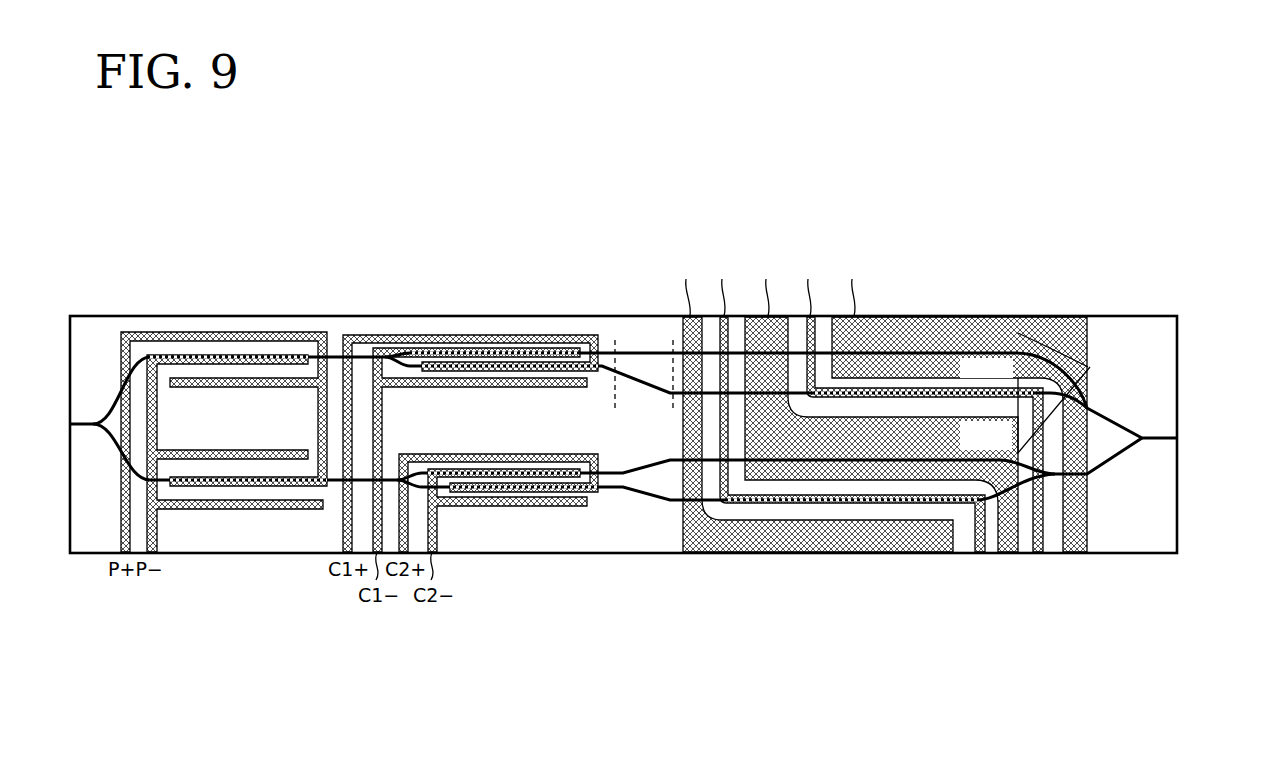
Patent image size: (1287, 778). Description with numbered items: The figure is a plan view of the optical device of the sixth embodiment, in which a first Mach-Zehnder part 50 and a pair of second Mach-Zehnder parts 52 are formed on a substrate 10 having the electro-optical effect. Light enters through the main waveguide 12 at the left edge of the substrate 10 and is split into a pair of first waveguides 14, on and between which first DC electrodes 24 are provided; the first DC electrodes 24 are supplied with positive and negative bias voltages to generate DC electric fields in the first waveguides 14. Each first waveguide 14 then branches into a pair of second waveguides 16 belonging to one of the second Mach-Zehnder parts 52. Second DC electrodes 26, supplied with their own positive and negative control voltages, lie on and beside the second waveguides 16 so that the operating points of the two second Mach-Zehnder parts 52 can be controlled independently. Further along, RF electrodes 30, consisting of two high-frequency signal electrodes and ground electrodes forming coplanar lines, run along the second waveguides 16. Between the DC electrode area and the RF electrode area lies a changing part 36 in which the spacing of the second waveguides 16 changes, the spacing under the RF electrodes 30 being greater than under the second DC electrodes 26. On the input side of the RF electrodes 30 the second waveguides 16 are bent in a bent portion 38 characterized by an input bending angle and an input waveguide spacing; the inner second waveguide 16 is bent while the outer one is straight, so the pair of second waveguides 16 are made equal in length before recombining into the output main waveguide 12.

The substrate 10 is at (1177, 476).
The main waveguide 12 is at (77, 423).
The first waveguides 14 is at (291, 355).
The second waveguides 16 is at (517, 350).
The first DC electrodes 24 is at (237, 333).
The second DC electrodes 26 is at (455, 335).
The RF electrodes 30 is at (875, 251).
The changing part 36 is at (673, 404).
The bent portion 38 is at (1053, 343).
The first Mach-Zehnder part 50 is at (388, 671).
The second Mach-Zehnder parts 52 is at (1095, 671).